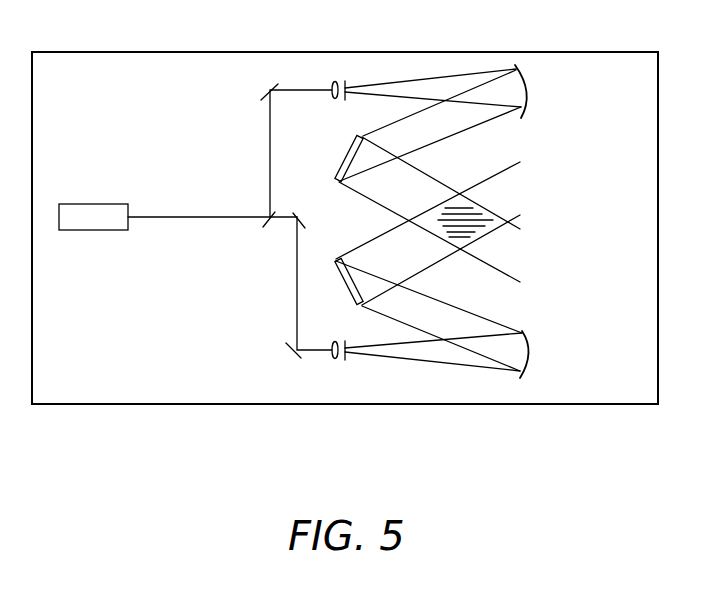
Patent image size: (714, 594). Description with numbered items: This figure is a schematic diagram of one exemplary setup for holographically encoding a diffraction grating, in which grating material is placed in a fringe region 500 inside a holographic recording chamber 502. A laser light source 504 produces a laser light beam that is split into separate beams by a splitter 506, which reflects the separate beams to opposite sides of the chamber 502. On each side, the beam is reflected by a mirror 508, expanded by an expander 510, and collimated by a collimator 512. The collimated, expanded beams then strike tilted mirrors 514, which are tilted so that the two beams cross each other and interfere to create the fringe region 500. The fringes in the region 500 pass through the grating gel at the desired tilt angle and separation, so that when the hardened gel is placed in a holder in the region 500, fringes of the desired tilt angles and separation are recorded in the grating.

The fringe region 500 is at (477, 208).
The holographic recording chamber 502 is at (219, 51).
The laser light source 504 is at (93, 204).
The splitter 506 is at (285, 214).
The mirrors 508 is at (272, 87).
The expanders 510 is at (333, 85).
The collimators 512 is at (527, 93).
The tilted mirrors 514 is at (349, 157).